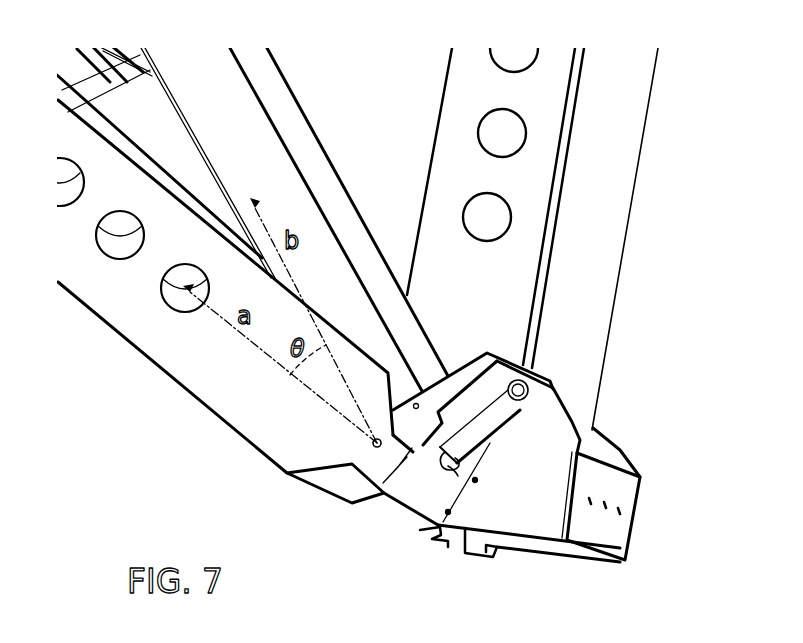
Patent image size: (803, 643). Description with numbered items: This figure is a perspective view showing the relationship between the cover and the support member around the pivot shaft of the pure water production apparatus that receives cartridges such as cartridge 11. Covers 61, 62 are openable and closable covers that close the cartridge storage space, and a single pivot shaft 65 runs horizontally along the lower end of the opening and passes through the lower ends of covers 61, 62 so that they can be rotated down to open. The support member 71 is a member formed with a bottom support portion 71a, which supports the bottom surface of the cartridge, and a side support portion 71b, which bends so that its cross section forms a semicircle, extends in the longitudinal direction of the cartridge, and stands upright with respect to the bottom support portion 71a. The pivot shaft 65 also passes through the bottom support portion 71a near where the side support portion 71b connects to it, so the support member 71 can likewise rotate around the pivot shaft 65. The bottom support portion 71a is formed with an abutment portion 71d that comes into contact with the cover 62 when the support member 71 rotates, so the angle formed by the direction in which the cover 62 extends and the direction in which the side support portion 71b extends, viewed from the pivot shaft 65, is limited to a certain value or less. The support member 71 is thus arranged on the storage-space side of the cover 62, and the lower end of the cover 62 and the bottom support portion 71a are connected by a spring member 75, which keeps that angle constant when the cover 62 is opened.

The cartridge 11 is at (617, 200).
The cover 61 is at (457, 78).
The cover 62 is at (112, 296).
The pivot shaft 65 is at (375, 447).
The support member 71 is at (357, 326).
The bottom support portion 71a is at (413, 408).
The side support portion 71b is at (283, 88).
The abutment portion 71d is at (472, 481).
The spring member 75 is at (497, 410).